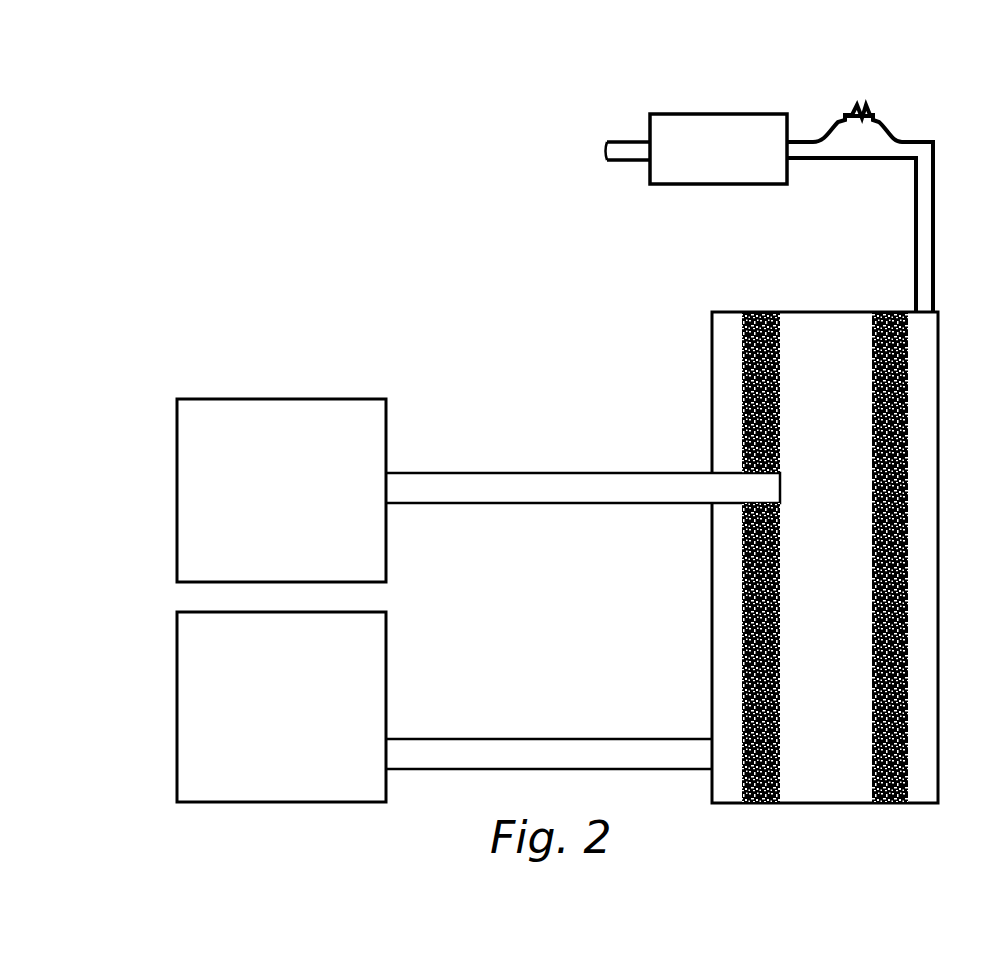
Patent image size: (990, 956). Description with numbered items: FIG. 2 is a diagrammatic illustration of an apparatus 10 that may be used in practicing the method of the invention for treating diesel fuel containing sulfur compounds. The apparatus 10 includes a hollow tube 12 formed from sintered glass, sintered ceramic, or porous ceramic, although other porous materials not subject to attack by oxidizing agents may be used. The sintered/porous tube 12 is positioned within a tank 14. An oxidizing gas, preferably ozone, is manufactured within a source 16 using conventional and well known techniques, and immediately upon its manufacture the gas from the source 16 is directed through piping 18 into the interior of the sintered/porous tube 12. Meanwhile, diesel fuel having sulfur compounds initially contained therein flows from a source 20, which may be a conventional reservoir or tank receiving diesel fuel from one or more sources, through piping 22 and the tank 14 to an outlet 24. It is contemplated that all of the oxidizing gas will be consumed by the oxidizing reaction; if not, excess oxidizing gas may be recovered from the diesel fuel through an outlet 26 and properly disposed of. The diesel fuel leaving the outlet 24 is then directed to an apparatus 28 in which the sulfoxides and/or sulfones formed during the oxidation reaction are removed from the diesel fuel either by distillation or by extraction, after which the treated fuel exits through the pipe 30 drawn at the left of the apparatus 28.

The apparatus 10 is at (280, 162).
The hollow tube 12 is at (872, 423).
The tank 14 is at (712, 366).
The source 16 is at (252, 399).
The piping 18 is at (540, 473).
The source 20 is at (177, 712).
The piping 22 is at (546, 739).
The outlet 24 is at (916, 265).
The outlet 26 is at (812, 120).
The apparatus 28 is at (708, 184).
The outlet pipe 30 is at (627, 141).